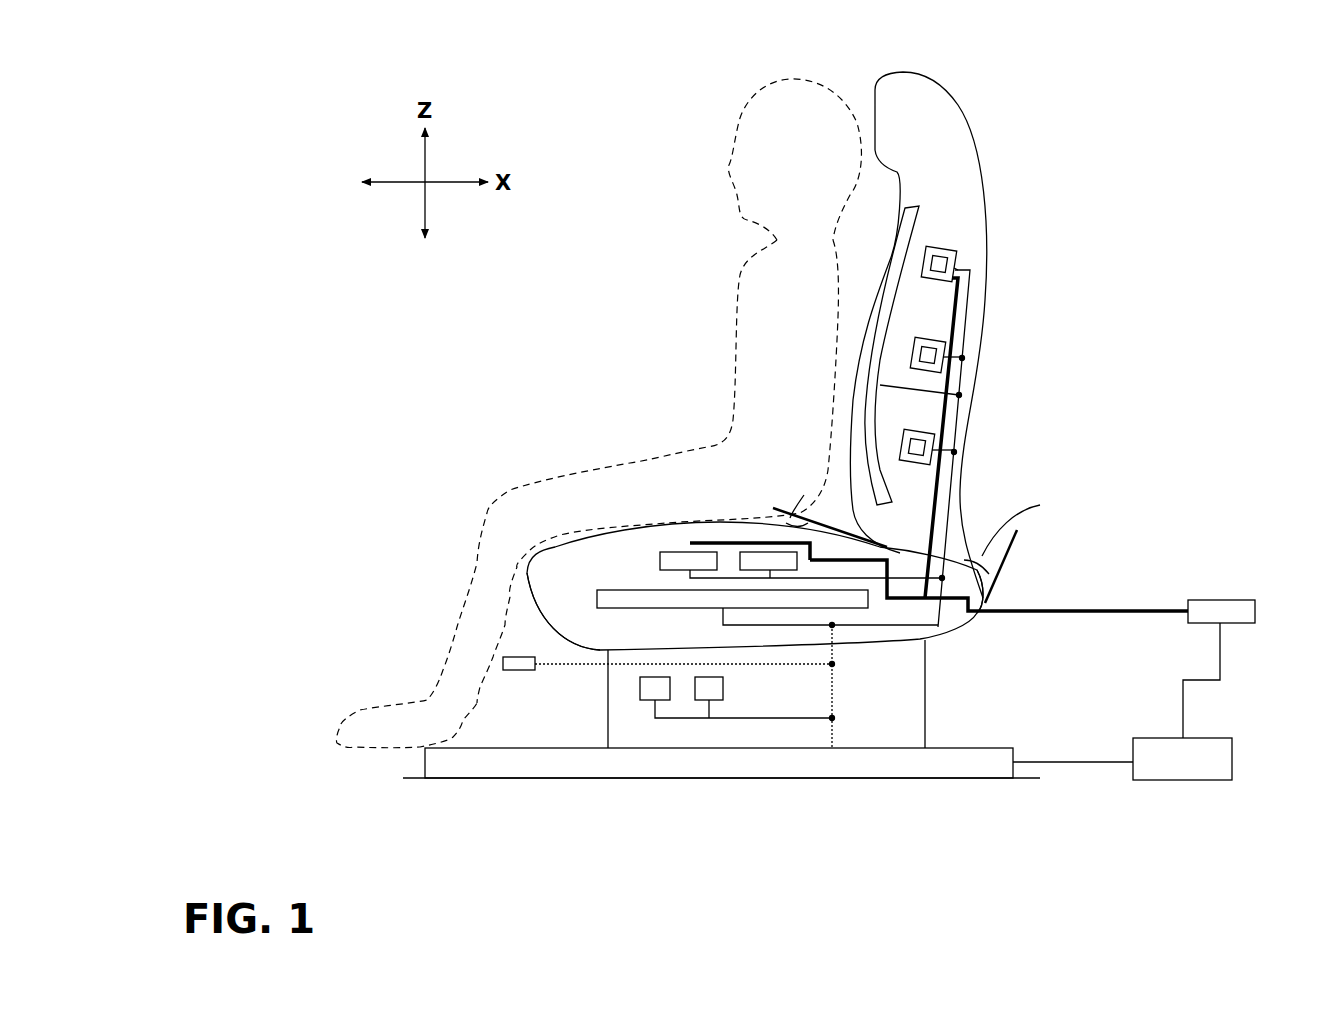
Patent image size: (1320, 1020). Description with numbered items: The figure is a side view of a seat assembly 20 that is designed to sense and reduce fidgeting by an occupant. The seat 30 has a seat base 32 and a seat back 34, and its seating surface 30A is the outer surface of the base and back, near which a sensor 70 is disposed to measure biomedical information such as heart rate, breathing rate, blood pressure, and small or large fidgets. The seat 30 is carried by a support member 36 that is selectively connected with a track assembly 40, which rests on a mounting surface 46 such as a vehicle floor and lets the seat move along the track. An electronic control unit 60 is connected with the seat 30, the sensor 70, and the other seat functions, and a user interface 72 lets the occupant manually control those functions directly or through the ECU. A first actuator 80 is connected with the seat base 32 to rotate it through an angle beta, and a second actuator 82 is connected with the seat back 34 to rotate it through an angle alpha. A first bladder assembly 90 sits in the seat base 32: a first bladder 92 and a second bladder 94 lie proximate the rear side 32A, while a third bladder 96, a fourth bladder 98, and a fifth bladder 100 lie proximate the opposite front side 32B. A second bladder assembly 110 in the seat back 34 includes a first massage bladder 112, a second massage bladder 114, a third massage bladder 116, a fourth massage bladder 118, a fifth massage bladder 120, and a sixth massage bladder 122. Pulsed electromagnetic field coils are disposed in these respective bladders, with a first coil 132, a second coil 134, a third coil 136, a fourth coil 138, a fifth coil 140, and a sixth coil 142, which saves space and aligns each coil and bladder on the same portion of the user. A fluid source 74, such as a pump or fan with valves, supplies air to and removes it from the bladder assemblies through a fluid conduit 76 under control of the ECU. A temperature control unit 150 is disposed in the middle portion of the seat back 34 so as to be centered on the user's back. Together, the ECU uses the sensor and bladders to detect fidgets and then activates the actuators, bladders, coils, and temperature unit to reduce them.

The seat assembly 20 is at (1152, 140).
The seat 30 is at (1102, 508).
The seating surface 30A is at (885, 166).
The seat base 32 is at (967, 630).
The rear side of seat base 32A is at (992, 624).
The front side of seat base 32B is at (528, 627).
The seat back 34 is at (967, 500).
The support member 36 is at (927, 703).
The track assembly 40 is at (992, 748).
The mounting surface 46 is at (413, 781).
The electronic control unit (ECU) 60 is at (1215, 737).
The sensor 70 is at (593, 599).
The user interface 72 is at (517, 672).
The fluid source 74 is at (1214, 600).
The fluid conduit 76 is at (1152, 596).
The first actuator 80 is at (640, 687).
The second actuator 82 is at (723, 685).
The first bladder assembly 90 is at (711, 535).
The first bladder 92 is at (764, 506).
The second bladder 94 is at (762, 552).
The third bladder 96 is at (717, 500).
The fourth bladder 98 is at (717, 500).
The fifth bladder 100 is at (682, 552).
The second bladder assembly 110 is at (946, 201).
The first massage bladder 112 is at (1040, 231).
The second massage bladder 114 is at (948, 240).
The third massage bladder 116 is at (1044, 325).
The fourth massage bladder 118 is at (941, 333).
The fifth massage bladder 120 is at (1034, 417).
The sixth massage bladder 122 is at (921, 430).
The first coil 132 is at (1045, 243).
The second coil 134 is at (947, 263).
The third coil 136 is at (1048, 336).
The fourth coil 138 is at (937, 357).
The fifth coil 140 is at (1039, 431).
The sixth coil 142 is at (927, 447).
The temperature control unit 150 is at (885, 262).